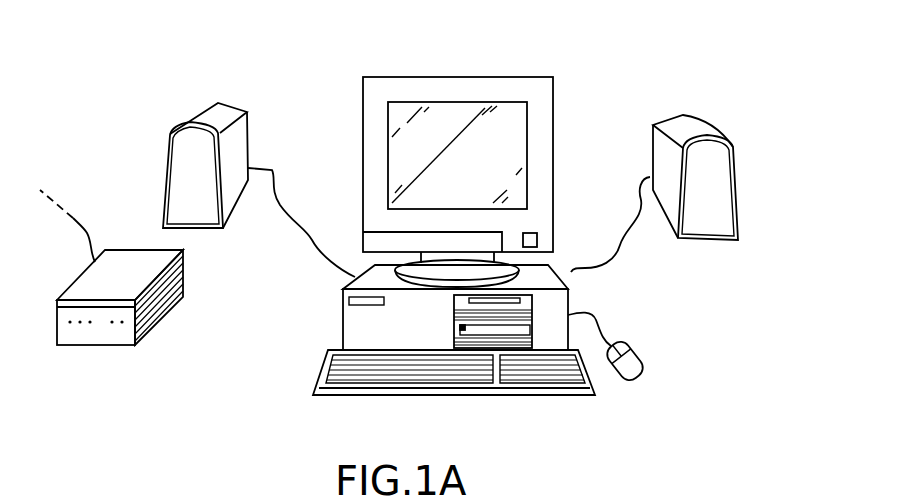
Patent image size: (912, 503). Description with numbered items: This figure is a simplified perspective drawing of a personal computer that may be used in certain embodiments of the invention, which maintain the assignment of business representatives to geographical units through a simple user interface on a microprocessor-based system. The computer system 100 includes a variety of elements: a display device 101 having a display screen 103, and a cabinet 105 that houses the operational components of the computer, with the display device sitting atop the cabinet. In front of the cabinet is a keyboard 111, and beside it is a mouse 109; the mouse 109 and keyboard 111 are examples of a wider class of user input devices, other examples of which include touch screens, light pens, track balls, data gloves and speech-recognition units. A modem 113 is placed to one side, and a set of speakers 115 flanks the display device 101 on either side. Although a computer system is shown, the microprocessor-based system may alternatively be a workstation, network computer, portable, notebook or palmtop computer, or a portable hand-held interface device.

The computer system 100 is at (604, 51).
The display device 101 is at (362, 97).
The display screen 103 is at (518, 134).
The cabinet 105 is at (353, 325).
The mouse 109 is at (637, 363).
The keyboard 111 is at (567, 377).
The modem 113 is at (109, 345).
The set of speakers 115 is at (178, 168).